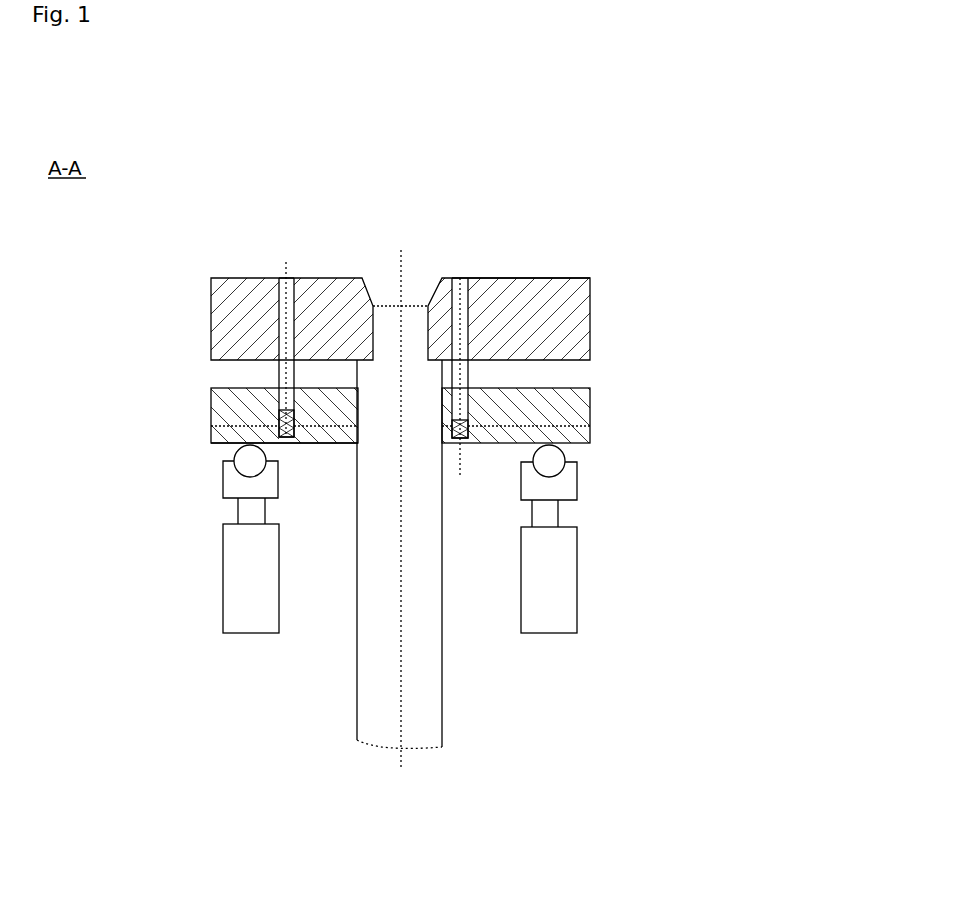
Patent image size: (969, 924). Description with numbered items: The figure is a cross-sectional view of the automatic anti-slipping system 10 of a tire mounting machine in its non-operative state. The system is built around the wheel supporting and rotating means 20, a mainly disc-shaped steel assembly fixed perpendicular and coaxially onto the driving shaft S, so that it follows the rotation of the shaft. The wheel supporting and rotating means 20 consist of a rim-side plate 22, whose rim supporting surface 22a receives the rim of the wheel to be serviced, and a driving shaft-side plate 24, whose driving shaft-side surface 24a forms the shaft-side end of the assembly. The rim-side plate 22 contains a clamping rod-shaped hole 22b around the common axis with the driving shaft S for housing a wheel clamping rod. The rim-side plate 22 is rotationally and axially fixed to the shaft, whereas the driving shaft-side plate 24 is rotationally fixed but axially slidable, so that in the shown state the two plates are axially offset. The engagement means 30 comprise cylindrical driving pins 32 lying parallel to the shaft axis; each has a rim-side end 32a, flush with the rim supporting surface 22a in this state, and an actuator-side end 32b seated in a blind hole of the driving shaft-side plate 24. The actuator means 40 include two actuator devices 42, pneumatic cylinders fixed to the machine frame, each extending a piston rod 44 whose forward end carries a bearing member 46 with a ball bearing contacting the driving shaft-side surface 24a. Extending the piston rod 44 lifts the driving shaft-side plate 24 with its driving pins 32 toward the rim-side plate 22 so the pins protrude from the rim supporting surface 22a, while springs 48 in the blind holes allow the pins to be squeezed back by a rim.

The automatic anti-slipping system 10 is at (764, 225).
The wheel supporting and rotating means 20 is at (700, 315).
The rim-side plate 22 is at (583, 345).
The rim supporting surface 22a is at (531, 278).
The clamping rod-shaped hole 22b is at (417, 291).
The driving shaft-side plate 24 is at (584, 405).
The driving shaft-side surface 24a is at (328, 449).
The engagement means 30 is at (360, 217).
The driving pin 32 is at (278, 280).
The rim-side end 32a is at (289, 277).
The actuator-side end 32b is at (282, 407).
The actuator means 40 is at (707, 420).
The actuator device 42 is at (574, 563).
The piston rod 44 is at (559, 513).
The bearing member 46 is at (574, 473).
The spring 48 is at (584, 427).
The driving shaft S is at (437, 691).